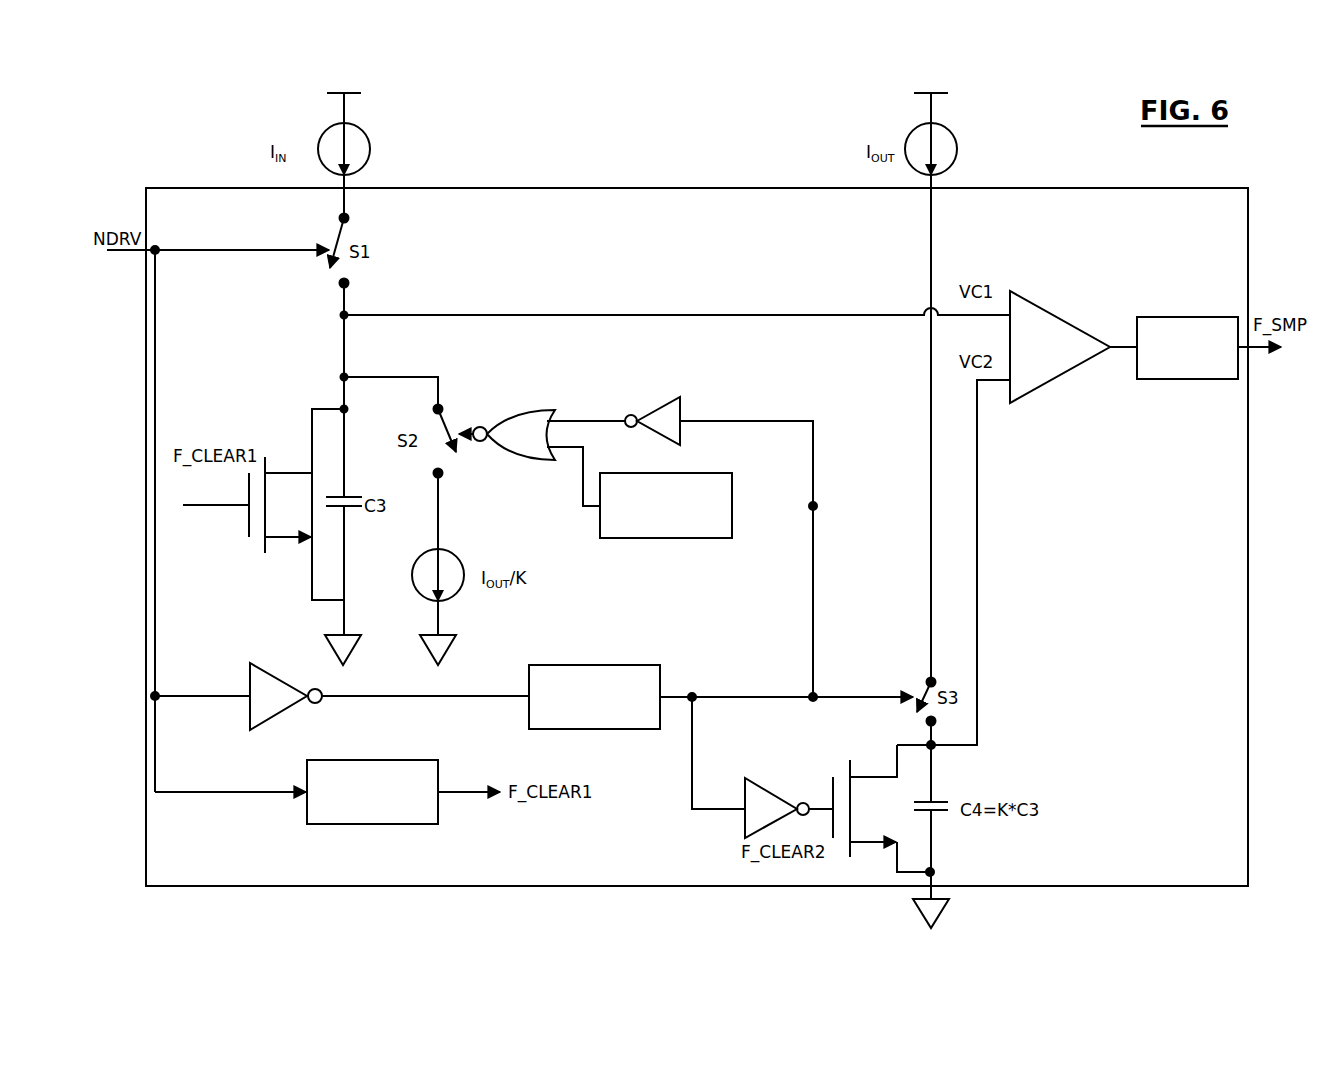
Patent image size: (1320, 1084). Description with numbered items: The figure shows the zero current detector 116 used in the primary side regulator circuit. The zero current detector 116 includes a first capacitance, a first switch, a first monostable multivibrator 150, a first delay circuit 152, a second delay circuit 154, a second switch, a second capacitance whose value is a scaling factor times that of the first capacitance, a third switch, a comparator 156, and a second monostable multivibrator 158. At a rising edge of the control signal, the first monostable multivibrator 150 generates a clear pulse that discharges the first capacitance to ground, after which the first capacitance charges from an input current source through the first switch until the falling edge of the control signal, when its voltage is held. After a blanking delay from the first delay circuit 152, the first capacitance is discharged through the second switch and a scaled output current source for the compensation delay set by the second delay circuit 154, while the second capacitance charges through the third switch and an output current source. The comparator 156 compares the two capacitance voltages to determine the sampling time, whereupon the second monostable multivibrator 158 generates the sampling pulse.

The zero current detector 116 is at (700, 188).
The first monostable multivibrator 150 is at (375, 760).
The first delay circuit 152 is at (598, 665).
The second delay circuit 154 is at (697, 473).
The comparator 156 is at (1058, 318).
The second monostable multivibrator 158 is at (1163, 317).